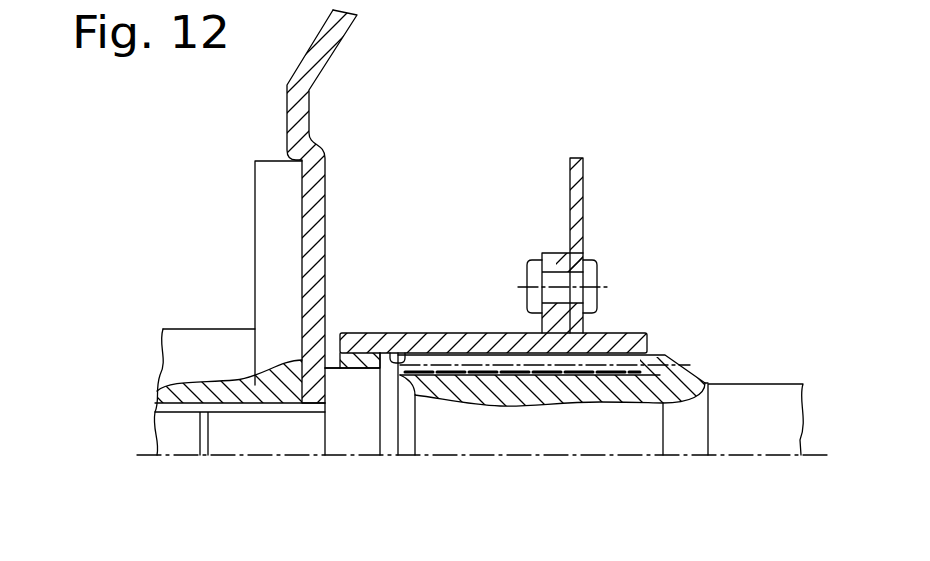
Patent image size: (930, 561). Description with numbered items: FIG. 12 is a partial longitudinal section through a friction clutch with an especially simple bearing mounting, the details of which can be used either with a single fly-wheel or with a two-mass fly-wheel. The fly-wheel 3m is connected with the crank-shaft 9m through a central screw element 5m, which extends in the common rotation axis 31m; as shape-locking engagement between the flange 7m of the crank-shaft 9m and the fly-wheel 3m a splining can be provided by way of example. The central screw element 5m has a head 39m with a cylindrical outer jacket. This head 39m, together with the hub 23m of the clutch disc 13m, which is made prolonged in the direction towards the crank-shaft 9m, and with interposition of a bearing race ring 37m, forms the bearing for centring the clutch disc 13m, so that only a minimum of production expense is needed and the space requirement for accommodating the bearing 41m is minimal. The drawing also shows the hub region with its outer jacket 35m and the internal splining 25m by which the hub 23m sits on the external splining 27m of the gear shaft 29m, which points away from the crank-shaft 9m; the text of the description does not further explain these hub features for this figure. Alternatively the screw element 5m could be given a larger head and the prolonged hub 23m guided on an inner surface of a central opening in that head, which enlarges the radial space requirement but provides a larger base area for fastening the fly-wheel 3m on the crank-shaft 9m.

The fly-wheel 3m is at (306, 88).
The flange 7m is at (265, 188).
The crank-shaft 9m is at (185, 345).
The clutch disc 13m is at (617, 197).
The bearing 41m is at (381, 323).
The head 39m is at (333, 363).
The bearing race ring 37m is at (362, 373).
The hook lip 35m is at (396, 352).
The central screw element 5m is at (345, 432).
The thin sheet 25m is at (647, 348).
The hub 23m is at (493, 348).
The wall 27m is at (645, 385).
The end block 29m is at (750, 438).
The common rotation axis 31m is at (555, 455).